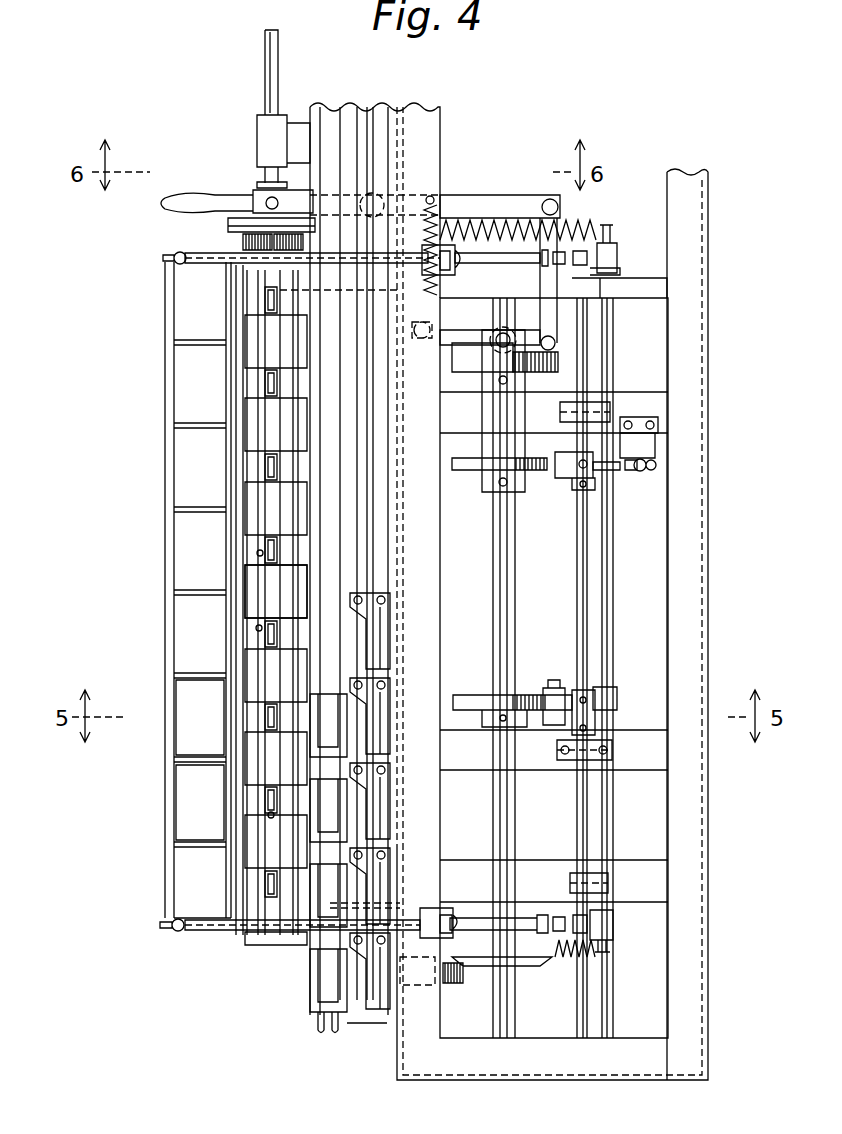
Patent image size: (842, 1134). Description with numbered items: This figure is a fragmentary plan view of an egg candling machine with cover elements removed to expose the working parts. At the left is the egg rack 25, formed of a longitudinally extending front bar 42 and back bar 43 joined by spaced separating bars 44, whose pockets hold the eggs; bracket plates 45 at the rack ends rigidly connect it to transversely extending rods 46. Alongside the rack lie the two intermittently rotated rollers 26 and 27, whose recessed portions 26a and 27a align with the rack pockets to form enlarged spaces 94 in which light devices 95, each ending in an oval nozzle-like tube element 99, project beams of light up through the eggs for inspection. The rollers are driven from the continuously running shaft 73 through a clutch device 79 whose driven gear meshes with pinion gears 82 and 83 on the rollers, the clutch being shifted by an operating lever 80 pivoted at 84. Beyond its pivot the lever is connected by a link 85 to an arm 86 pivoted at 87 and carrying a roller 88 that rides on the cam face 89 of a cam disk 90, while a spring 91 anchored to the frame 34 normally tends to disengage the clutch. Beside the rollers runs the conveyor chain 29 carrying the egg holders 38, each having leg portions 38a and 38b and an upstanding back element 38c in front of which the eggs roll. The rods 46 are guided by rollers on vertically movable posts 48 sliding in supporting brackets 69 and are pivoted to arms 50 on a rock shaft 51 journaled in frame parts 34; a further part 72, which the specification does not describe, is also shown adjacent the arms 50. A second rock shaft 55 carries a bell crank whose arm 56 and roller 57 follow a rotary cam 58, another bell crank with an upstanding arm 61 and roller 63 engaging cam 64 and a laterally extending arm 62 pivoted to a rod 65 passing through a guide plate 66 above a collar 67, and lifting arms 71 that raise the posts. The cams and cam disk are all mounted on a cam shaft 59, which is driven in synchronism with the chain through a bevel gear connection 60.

The rack 25 is at (168, 573).
The roller 26 is at (255, 597).
The recessed portion of roller 26a is at (263, 548).
The roller 27 is at (256, 632).
The recessed portion of roller 27a is at (265, 553).
The conveyor chain 29 is at (380, 549).
The frame part 34 is at (405, 118).
The egg holder 38 is at (372, 880).
The leg portion of egg holder 38a is at (318, 718).
The leg portion of egg holder 38b is at (352, 738).
The upstanding back element 38c is at (395, 670).
The front bar 42 is at (168, 790).
The back bar 43 is at (262, 792).
The separating bar 44 is at (208, 756).
The bracket plate 45 is at (168, 256).
The rod 46 is at (210, 256).
The post 48 is at (450, 272).
The arm 50 is at (620, 260).
The rock shaft 51 is at (612, 645).
The rock shaft 55 is at (582, 600).
The upwardly extending arm 56 is at (578, 710).
The anti-friction roller 57 is at (548, 690).
The rotary cam 58 is at (468, 696).
The cam shaft 59 is at (505, 618).
The bevel gear connection 60 is at (465, 975).
The upstanding arm 61 is at (570, 480).
The laterally extending arm 62 is at (620, 470).
The anti-friction roller 63 is at (546, 472).
The rotary cam 64 is at (470, 472).
The rod 65 is at (636, 470).
The guide plate 66 is at (640, 447).
The collar 67 is at (657, 465).
The supporting bracket 69 is at (456, 264).
The lifting arm 71 is at (526, 264).
The spring 72 is at (582, 222).
The shaft 73 is at (266, 70).
The clutch device 79 is at (245, 210).
The operating lever 80 is at (184, 198).
The pinion gear 82 is at (258, 243).
The pinion gear 83 is at (287, 243).
The pivot 84 is at (385, 198).
The link 85 is at (545, 218).
The arm 86 is at (475, 338).
The pivot 87 is at (422, 340).
The roller 88 is at (506, 334).
The cam face 89 is at (549, 337).
The cam disk 90 is at (558, 362).
The spring 91 is at (440, 222).
The enlarged space 94 is at (262, 640).
The light device 95 is at (265, 816).
The nozzle-like tube element 99 is at (263, 464).